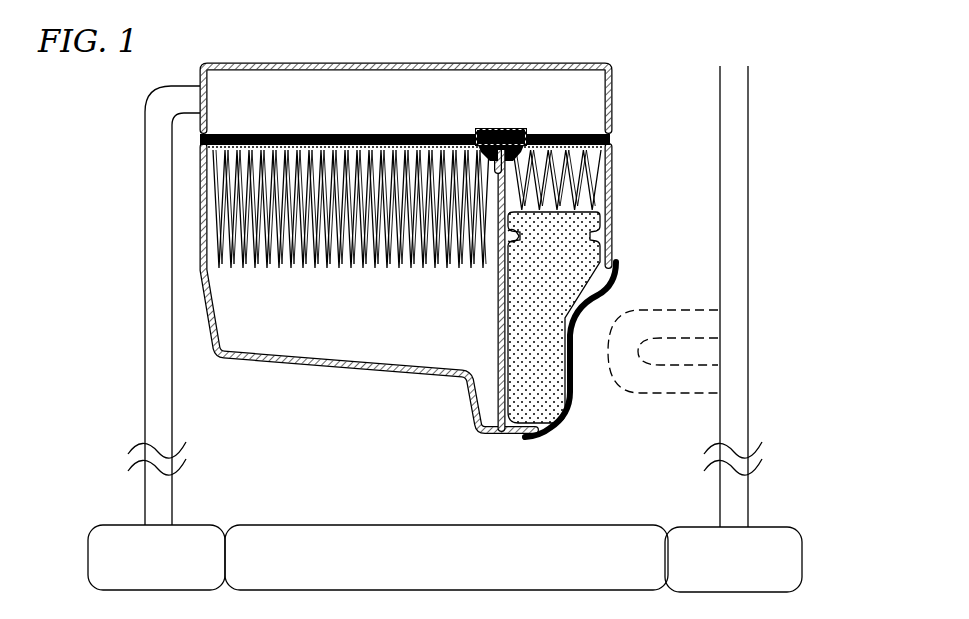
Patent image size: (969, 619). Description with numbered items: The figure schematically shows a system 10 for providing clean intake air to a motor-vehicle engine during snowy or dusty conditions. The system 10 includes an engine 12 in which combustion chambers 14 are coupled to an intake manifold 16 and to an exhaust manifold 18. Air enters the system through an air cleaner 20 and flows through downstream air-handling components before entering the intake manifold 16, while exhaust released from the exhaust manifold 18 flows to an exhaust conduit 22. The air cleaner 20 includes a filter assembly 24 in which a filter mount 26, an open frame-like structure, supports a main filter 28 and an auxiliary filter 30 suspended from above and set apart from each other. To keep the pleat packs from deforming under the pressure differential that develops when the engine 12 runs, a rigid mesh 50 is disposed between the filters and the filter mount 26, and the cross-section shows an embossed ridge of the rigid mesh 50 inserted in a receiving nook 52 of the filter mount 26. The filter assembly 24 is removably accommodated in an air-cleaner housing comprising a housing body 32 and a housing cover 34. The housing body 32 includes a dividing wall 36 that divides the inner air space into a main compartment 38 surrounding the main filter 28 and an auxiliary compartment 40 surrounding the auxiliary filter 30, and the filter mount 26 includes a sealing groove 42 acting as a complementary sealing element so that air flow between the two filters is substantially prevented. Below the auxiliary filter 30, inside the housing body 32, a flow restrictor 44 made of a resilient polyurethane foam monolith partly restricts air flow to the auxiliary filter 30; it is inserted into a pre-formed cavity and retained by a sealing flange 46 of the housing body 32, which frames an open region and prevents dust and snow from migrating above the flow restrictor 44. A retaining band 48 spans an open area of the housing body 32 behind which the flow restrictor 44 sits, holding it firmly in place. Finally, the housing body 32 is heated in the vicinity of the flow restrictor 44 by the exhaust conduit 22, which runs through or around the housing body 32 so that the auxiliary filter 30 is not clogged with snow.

The system 10 is at (74, 190).
The engine 12 is at (76, 526).
The combustion chambers 14 is at (446, 557).
The intake manifold 16 is at (156, 557).
The exhaust manifold 18 is at (733, 559).
The air cleaner 20 is at (664, 192).
The exhaust conduit 22 is at (750, 97).
The filter assembly 24 is at (384, 122).
The filter mount 26 is at (226, 134).
The main filter 28 is at (351, 209).
The auxiliary filter 30 is at (557, 180).
The housing body 32 is at (614, 163).
The housing cover 34 is at (614, 80).
The dividing wall 36 is at (494, 308).
The main compartment 38 is at (352, 311).
The auxiliary compartment 40 is at (600, 216).
The sealing groove 42 is at (502, 148).
The flow restrictor 44 is at (554, 317).
The sealing flange 46 is at (522, 236).
The retaining band 48 is at (576, 394).
The rigid mesh 50 is at (290, 134).
The receiving nook 52 is at (462, 128).